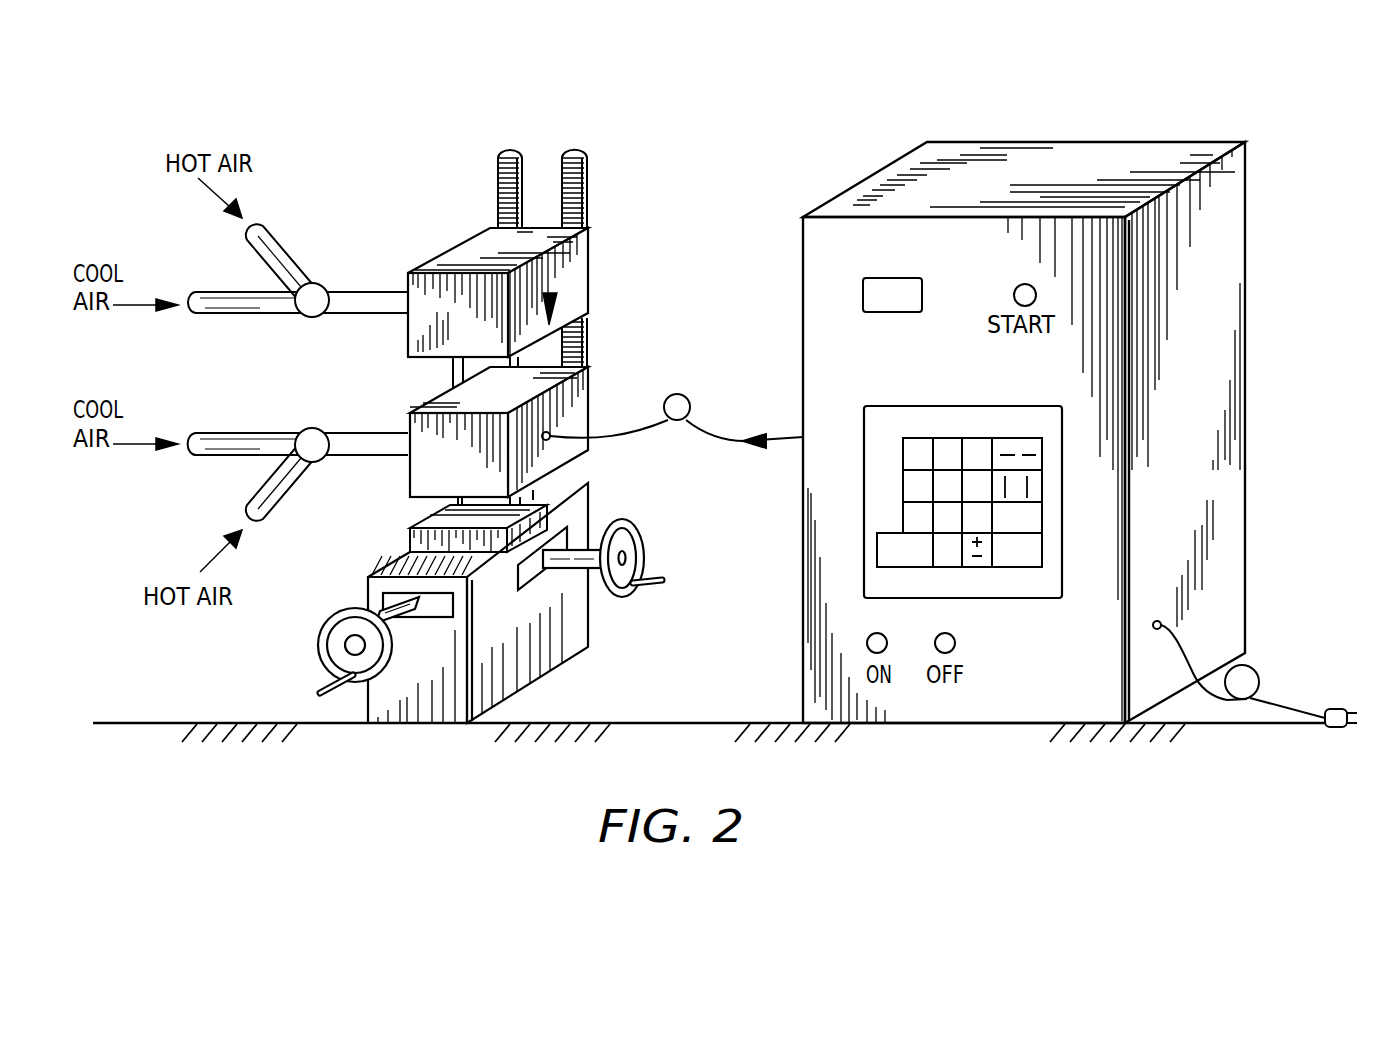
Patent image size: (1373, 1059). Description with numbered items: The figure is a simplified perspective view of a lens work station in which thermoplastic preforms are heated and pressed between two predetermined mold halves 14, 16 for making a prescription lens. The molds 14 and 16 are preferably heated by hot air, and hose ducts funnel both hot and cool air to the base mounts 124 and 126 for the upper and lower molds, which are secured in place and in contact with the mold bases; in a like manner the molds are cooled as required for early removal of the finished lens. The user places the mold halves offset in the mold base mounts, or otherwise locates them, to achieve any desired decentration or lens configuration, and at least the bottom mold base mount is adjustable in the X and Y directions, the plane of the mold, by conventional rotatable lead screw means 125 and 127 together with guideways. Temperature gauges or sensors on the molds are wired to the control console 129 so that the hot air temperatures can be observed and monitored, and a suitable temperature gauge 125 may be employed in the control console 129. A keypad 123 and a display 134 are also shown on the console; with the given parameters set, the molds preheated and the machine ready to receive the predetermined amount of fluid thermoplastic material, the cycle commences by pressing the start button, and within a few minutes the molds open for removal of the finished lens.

The mold 14 is at (452, 372).
The mold 16 is at (450, 388).
The keypad 123 is at (977, 440).
The base mount 124 is at (412, 502).
The lead screw means 125 is at (415, 623).
The base mount 126 is at (407, 283).
The lead screw means 127 is at (575, 570).
The control console 129 is at (1088, 610).
The display 134 is at (892, 295).